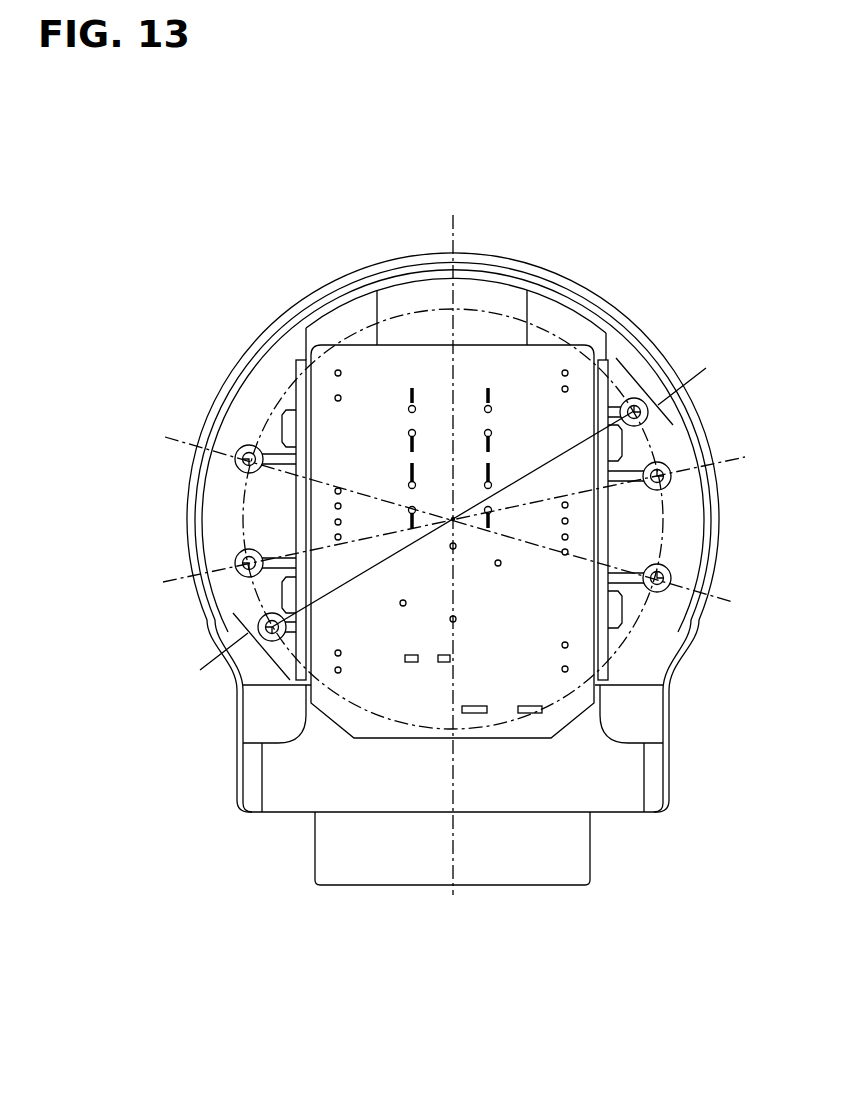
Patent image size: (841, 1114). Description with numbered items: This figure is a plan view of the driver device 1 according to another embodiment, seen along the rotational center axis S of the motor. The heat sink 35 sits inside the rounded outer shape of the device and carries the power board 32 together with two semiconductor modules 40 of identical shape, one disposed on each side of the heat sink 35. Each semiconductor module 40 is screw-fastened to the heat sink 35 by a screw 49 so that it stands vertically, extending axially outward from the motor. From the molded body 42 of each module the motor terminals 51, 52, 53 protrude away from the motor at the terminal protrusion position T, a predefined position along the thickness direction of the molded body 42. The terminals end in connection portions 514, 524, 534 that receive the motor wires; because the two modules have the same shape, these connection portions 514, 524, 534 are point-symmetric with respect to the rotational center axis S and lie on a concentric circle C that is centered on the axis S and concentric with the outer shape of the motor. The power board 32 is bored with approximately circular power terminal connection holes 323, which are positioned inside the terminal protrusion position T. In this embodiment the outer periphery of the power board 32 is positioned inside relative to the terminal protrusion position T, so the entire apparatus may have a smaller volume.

The driver device 1 is at (258, 862).
The power board 32 is at (495, 362).
The heat sink 35 is at (562, 320).
The semiconductor module 40 is at (297, 372).
The molded body 42 is at (298, 395).
The screw 49 is at (286, 422).
The motor terminal 51 is at (442, 517).
The connection portion 514 is at (731, 580).
The motor terminal 52 is at (447, 519).
The connection portion 524 is at (240, 566).
The motor terminal 53 is at (437, 493).
The connection portion 534 is at (250, 632).
The power terminal connection hole 323 is at (343, 373).
The concentric circle C is at (415, 307).
The rotational center axis S is at (450, 525).
The terminal protrusion position T is at (233, 683).